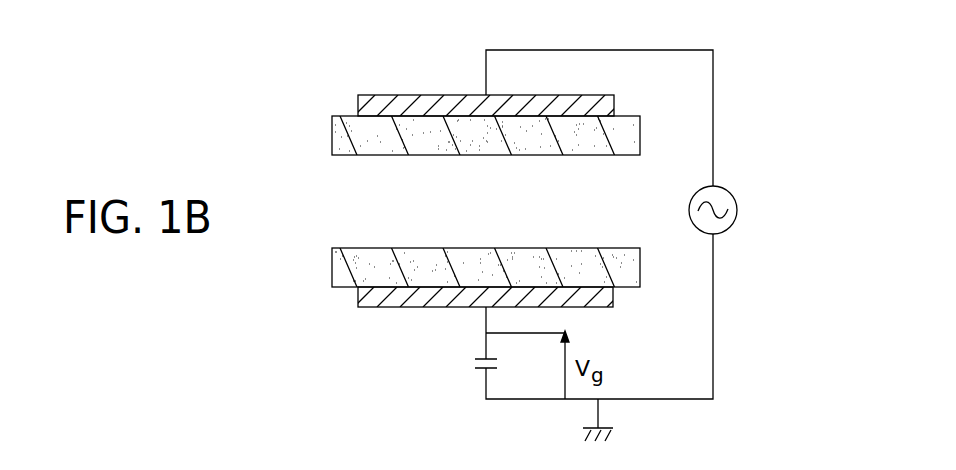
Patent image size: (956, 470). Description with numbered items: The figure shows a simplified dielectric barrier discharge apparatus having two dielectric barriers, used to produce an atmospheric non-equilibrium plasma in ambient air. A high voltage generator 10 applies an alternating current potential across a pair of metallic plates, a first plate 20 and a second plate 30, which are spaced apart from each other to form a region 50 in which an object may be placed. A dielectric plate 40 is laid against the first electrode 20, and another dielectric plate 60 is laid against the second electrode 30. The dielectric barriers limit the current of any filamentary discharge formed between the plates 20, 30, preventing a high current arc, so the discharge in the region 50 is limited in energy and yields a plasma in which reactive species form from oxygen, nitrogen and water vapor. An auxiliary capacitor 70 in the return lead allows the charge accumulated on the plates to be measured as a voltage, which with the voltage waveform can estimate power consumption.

The high voltage generator 10 is at (730, 227).
The first plate 20 is at (533, 95).
The second plate 30 is at (377, 307).
The dielectric plate 40 is at (632, 116).
The region 50 is at (500, 216).
The dielectric plate 60 is at (347, 287).
The capacitor 70 is at (482, 372).